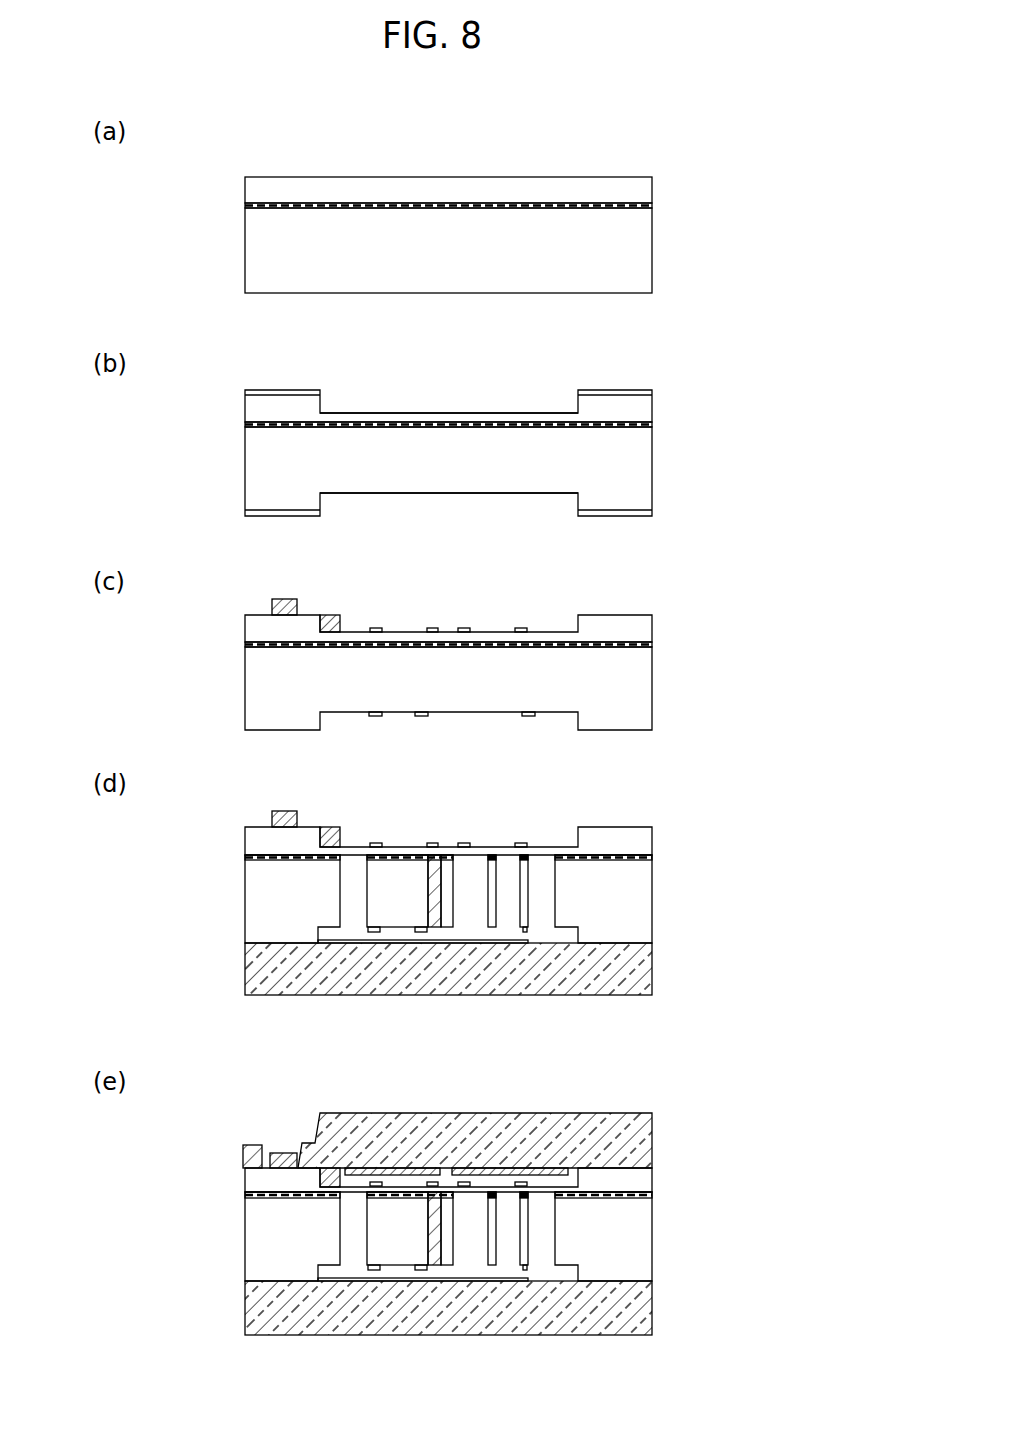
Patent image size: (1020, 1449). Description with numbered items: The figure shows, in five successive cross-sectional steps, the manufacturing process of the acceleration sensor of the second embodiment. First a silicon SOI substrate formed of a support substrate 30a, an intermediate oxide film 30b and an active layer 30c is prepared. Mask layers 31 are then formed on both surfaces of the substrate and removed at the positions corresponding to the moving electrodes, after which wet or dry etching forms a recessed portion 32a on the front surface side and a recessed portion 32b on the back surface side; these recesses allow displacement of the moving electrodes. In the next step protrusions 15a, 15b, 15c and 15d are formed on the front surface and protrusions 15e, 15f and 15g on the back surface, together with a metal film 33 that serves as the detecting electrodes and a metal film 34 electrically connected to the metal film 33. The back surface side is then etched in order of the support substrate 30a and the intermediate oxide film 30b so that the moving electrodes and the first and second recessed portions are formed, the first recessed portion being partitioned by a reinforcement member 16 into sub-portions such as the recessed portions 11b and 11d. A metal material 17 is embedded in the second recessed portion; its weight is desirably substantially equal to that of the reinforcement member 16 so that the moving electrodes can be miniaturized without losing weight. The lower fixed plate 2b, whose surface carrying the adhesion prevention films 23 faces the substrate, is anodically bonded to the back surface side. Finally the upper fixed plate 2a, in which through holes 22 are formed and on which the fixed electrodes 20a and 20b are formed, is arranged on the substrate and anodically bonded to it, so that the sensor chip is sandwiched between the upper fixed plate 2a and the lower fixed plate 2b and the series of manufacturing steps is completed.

The upper fixed plate 2a is at (652, 1138).
The lower fixed plate 2b is at (652, 968).
The recessed portion 11b is at (468, 917).
The recessed portion 11d is at (505, 917).
The protrusion 15a is at (378, 628).
The protrusion 15b is at (434, 628).
The protrusion 15c is at (472, 628).
The protrusion 15d is at (524, 628).
The protrusion 15e is at (377, 718).
The protrusion 15f is at (427, 718).
The protrusion 15g is at (530, 718).
The reinforcement member 16 is at (492, 900).
The metal material 17 is at (437, 928).
The fixed electrode 20a is at (520, 1168).
The fixed electrode 20b is at (413, 1168).
The through hole 22 is at (267, 1137).
The adhesion prevention film 23 is at (378, 941).
The support substrate 30a is at (652, 248).
The intermediate oxide film 30b is at (652, 206).
The active layer 30c is at (652, 188).
The mask layer 31 is at (652, 393).
The recessed portion 32a is at (460, 402).
The recessed portion 32b is at (468, 500).
The metal film 33 is at (336, 616).
The metal film 34 is at (290, 600).